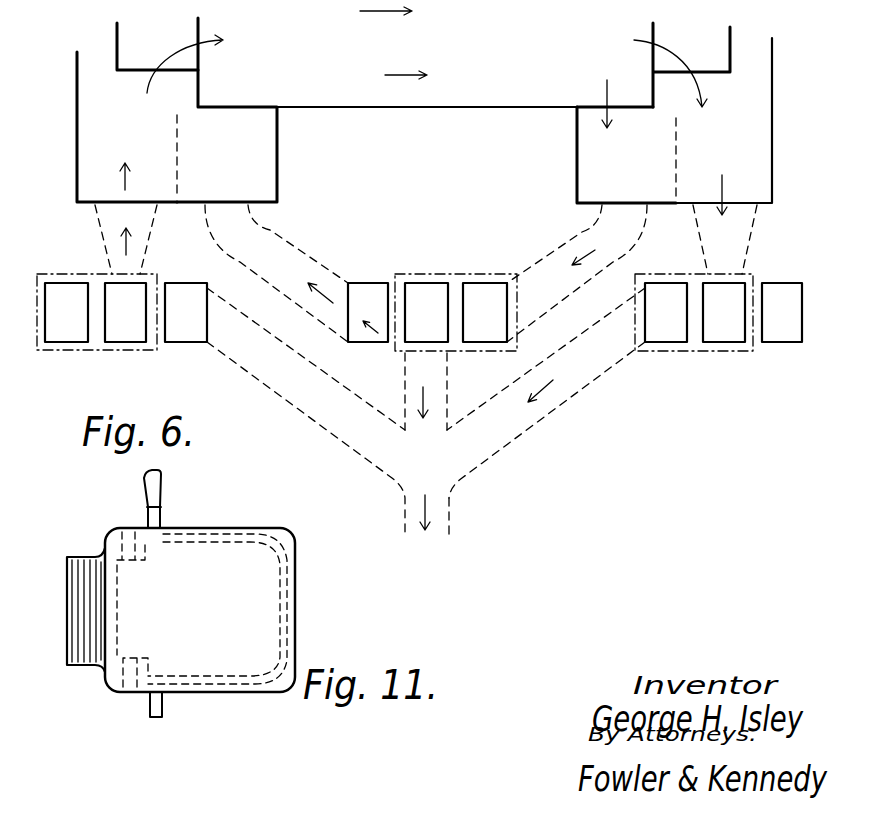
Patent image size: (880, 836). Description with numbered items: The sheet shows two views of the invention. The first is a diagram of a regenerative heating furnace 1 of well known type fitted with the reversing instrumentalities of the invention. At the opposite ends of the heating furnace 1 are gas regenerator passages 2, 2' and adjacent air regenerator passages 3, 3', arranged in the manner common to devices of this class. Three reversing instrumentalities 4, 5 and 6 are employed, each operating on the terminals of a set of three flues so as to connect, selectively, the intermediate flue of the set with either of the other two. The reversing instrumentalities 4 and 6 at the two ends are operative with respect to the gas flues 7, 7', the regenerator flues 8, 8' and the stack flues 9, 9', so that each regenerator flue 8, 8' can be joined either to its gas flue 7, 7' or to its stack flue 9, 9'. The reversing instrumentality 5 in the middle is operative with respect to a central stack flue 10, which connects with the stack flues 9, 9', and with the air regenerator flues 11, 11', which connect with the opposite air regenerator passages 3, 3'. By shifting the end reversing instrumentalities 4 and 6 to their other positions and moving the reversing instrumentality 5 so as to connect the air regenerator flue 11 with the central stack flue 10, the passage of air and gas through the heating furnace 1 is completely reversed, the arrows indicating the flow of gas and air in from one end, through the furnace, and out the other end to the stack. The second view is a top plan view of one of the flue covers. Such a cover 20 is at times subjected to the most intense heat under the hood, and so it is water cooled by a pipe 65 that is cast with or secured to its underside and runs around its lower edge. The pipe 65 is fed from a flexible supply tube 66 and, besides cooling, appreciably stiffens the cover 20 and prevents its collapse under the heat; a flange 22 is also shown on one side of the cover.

In FIG. 6, the heating furnace 1 is at (355, 107).
In FIG. 6, the gas regenerator passage 2 is at (127, 163).
In FIG. 6, the air regenerator passage 3 is at (197, 110).
In FIG. 6, the gas regenerator passage 2' is at (712, 148).
In FIG. 6, the air regenerator passage 3' is at (626, 141).
In FIG. 6, the reversing instrumentality 4 is at (90, 350).
In FIG. 6, the reversing instrumentality 5 is at (453, 353).
In FIG. 6, the reversing instrumentality 6 is at (692, 353).
In FIG. 6, the gas flue 7 is at (66, 337).
In FIG. 6, the gas flue 7' is at (788, 335).
In FIG. 6, the regenerator flue 8 is at (135, 335).
In FIG. 6, the regenerator flue 8' is at (728, 340).
In FIG. 6, the stack flue 9 is at (285, 410).
In FIG. 6, the stack flue 9' is at (548, 420).
In FIG. 6, the central stack flue 10 is at (418, 365).
In FIG. 6, the air regenerator flue 11 is at (287, 273).
In FIG. 6, the air regenerator flue 11' is at (577, 273).
In FIG. 11, the cover 20 is at (243, 536).
In FIG. 11, the flange 22 is at (67, 593).
In FIG. 11, the pipe 65 is at (296, 605).
In FIG. 11, the flexible supply tube 66 is at (147, 503).